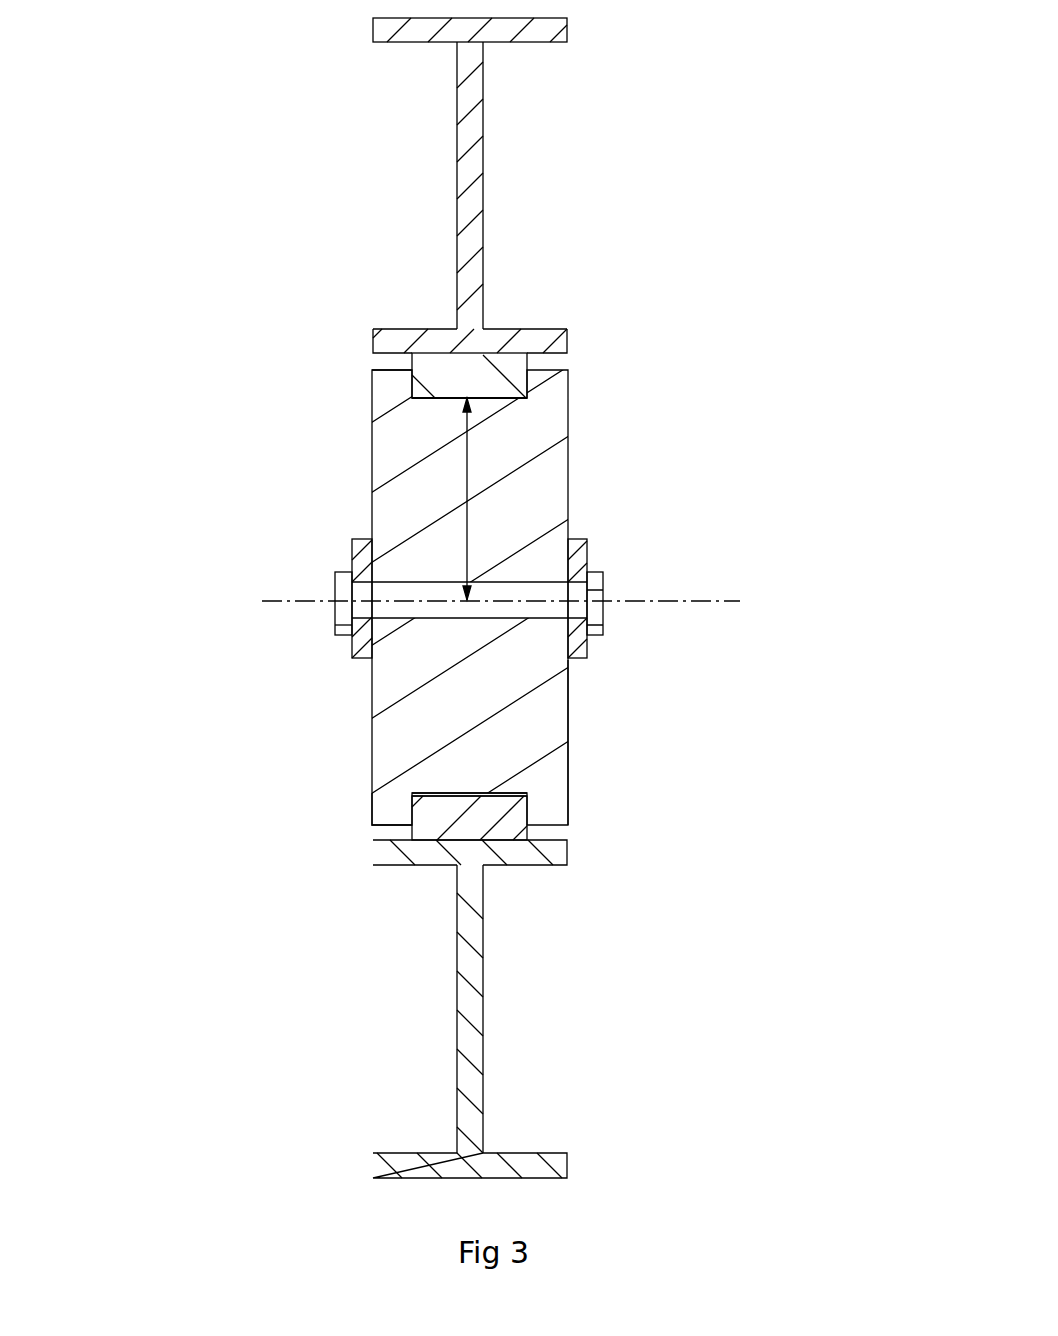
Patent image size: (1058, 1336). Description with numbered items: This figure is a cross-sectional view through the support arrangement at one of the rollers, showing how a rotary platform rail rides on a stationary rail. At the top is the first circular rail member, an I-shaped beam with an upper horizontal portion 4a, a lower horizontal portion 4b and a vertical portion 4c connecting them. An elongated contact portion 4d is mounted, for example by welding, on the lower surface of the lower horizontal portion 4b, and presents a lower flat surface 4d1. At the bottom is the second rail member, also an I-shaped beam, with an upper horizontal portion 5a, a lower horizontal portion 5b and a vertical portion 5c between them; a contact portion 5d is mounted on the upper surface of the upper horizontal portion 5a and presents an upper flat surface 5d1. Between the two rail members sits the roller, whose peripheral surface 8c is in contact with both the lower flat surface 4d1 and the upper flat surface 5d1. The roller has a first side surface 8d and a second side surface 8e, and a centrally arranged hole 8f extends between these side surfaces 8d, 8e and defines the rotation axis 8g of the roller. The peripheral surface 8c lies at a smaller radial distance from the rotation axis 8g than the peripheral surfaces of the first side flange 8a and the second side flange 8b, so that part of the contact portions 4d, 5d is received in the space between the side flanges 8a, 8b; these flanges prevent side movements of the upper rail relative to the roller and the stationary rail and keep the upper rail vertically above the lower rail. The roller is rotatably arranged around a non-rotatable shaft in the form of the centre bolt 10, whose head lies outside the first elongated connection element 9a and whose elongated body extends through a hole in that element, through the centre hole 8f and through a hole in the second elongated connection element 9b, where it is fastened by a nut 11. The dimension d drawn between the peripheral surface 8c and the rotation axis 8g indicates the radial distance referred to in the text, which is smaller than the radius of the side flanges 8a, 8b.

The upper horizontal portion 4a is at (390, 40).
The lower horizontal portion 4b is at (386, 341).
The vertical portion 4c is at (473, 207).
The contact portion 4d is at (483, 380).
The lower flat surface 4d1 is at (443, 398).
The upper horizontal portion 5a is at (372, 857).
The lower horizontal portion 5b is at (387, 1153).
The vertical portion 5c is at (468, 982).
The contact portion 5d is at (497, 817).
The upper flat surface 5d1 is at (465, 797).
The first side flange 8a is at (395, 382).
The second side flange 8b is at (565, 371).
The peripheral surface 8c is at (435, 355).
The first side surface 8d is at (373, 793).
The second side surface 8e is at (565, 758).
The centre hole 8f is at (538, 617).
The rotation axis 8g is at (278, 603).
The first elongated connection element 9a is at (353, 555).
The second elongated connection element 9b is at (578, 558).
The centre bolt 10 is at (400, 600).
The nut 11 is at (592, 582).
The distance d is at (465, 467).